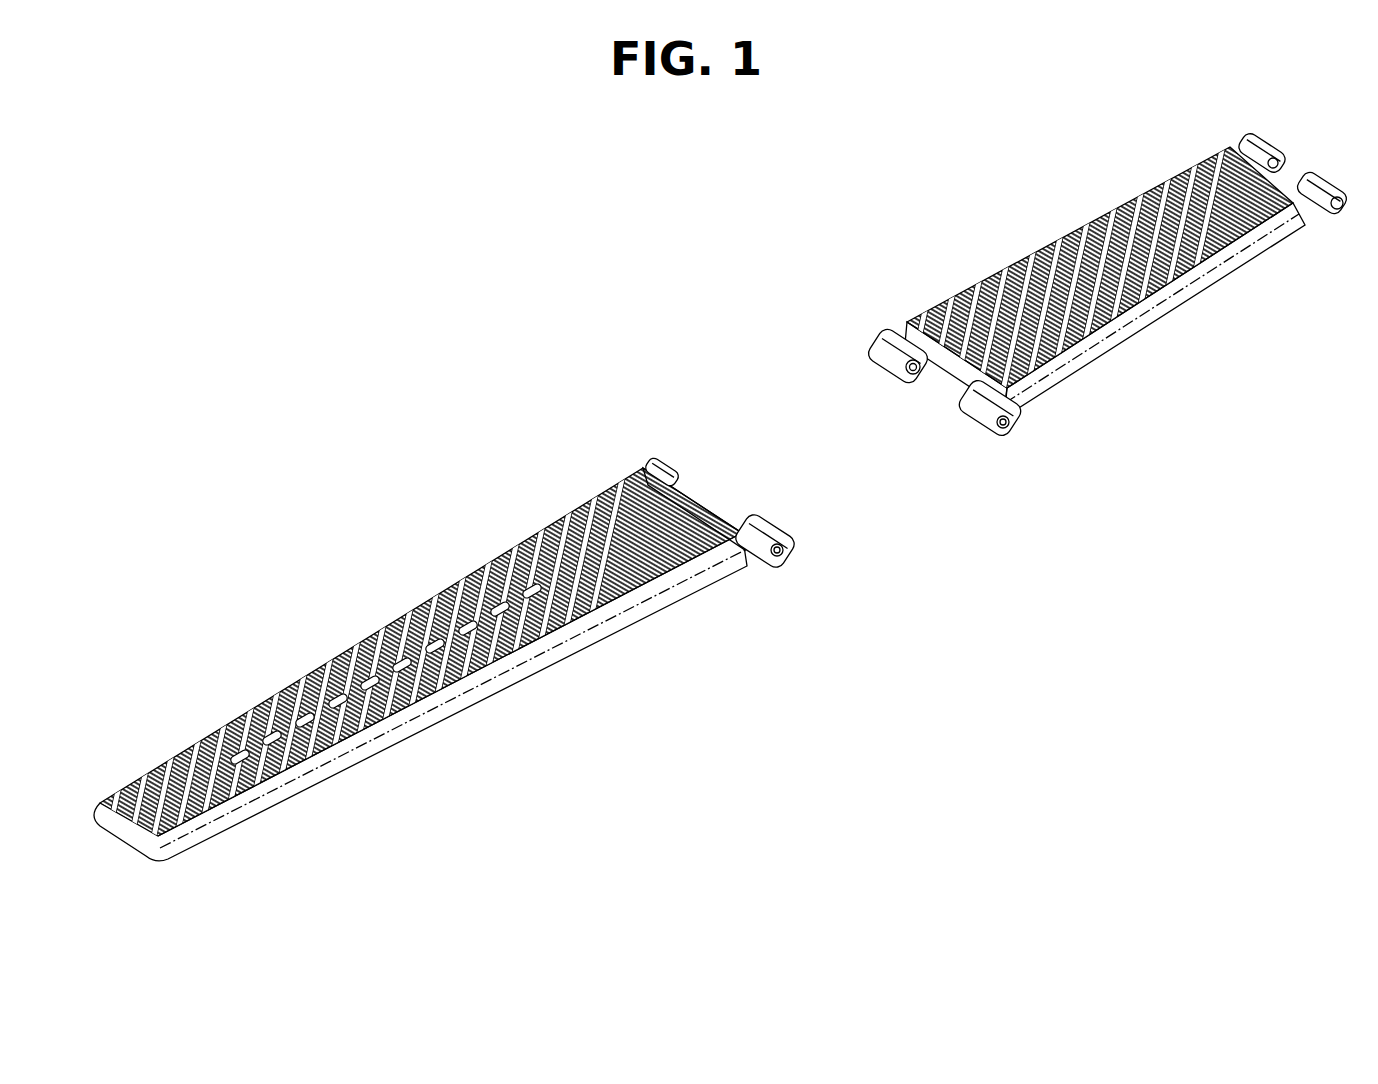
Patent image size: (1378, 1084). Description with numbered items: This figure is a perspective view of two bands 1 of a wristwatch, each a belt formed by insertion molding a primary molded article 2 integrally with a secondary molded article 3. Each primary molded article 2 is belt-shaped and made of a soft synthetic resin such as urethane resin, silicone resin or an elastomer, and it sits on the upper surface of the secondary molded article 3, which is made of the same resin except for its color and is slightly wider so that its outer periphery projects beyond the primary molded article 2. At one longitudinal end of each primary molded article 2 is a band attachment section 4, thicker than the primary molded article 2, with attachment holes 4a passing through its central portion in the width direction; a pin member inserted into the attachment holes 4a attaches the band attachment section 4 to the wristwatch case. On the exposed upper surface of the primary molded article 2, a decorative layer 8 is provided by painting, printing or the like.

The band 1 is at (717, 548).
The primary molded article 2 is at (275, 795).
The secondary molded article 3 is at (346, 767).
The band attachment section 4 is at (680, 466).
The attachment holes 4a is at (785, 553).
The decorative layer 8 is at (406, 625).